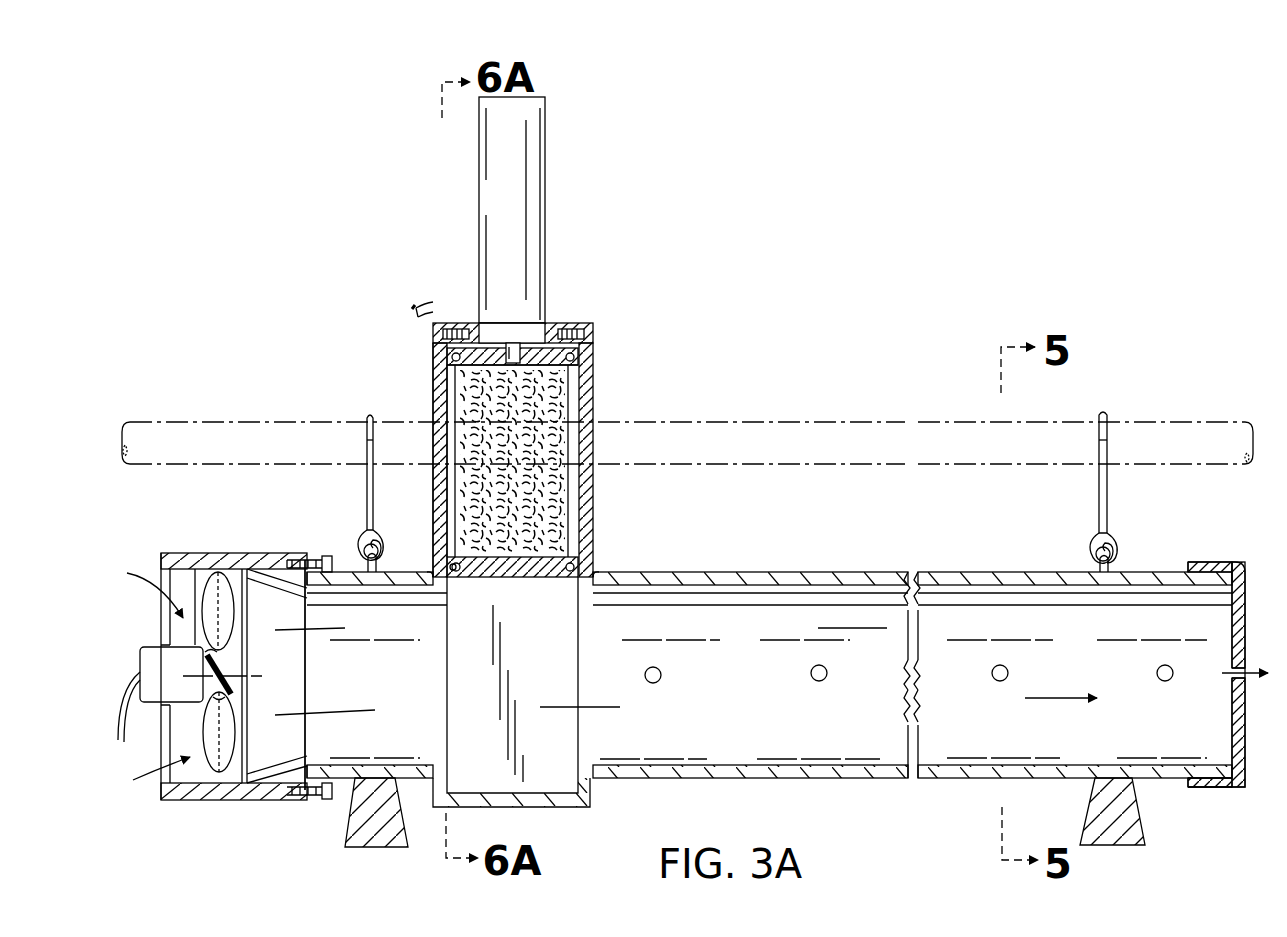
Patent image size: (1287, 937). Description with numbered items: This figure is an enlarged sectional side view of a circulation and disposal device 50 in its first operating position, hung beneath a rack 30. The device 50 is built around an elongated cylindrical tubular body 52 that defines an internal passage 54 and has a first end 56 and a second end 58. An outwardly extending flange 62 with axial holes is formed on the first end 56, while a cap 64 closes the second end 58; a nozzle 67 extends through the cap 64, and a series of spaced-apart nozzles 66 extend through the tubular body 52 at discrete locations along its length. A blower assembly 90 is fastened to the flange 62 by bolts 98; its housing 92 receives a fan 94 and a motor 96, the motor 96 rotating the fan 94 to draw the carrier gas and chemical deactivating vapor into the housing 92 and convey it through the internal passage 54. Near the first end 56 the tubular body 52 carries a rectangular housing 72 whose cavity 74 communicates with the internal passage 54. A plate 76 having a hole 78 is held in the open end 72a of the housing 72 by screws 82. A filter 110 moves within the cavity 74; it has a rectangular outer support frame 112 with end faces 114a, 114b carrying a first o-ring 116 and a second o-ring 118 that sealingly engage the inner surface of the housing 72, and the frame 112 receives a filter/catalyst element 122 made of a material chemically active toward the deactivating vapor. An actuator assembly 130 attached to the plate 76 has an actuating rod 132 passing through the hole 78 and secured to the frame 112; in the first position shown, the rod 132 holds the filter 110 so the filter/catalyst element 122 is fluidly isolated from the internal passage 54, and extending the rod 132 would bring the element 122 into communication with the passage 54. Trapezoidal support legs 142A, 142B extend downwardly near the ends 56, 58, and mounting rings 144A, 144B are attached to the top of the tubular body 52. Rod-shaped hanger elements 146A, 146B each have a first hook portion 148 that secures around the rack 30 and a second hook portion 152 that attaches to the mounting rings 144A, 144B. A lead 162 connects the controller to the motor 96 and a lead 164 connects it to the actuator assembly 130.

The rack 30 is at (802, 415).
The circulation and disposal device 50 is at (740, 550).
The tubular body 52 is at (836, 782).
The internal passage 54 is at (773, 752).
The first end 56 is at (342, 792).
The second end 58 is at (1196, 772).
The flange 62 is at (312, 558).
The cap 64 is at (1246, 600).
The nozzles 66 is at (659, 680).
The nozzle 67 is at (1240, 682).
The housing 72 is at (600, 398).
The open end 72a is at (586, 325).
The cavity 74 is at (556, 773).
The plate 76 is at (547, 326).
The hole 78 is at (513, 322).
The screws 82 is at (592, 335).
The blower assembly 90 is at (215, 802).
The housing 92 is at (174, 800).
The fan 94 is at (219, 600).
The motor 96 is at (145, 676).
The bolts 98 is at (328, 555).
The filter 110 is at (456, 405).
The outer support frame 112 is at (548, 364).
The end face 114a is at (580, 558).
The end face 114b is at (446, 548).
The first o-ring 116 is at (582, 568).
The second o-ring 118 is at (452, 580).
The filter/catalyst element 122 is at (553, 497).
The actuator assembly 130 is at (546, 136).
The actuating rod 132 is at (520, 323).
The support leg 142A is at (372, 836).
The support leg 142B is at (1125, 833).
The mounting ring 144A is at (372, 566).
The mounting ring 144B is at (1098, 570).
The hanger element 146A is at (362, 440).
The hanger element 146B is at (1110, 440).
The first hook portion 148 is at (368, 414).
The second hook portion 152 is at (366, 560).
The lead 162 is at (140, 670).
The lead 164 is at (437, 300).